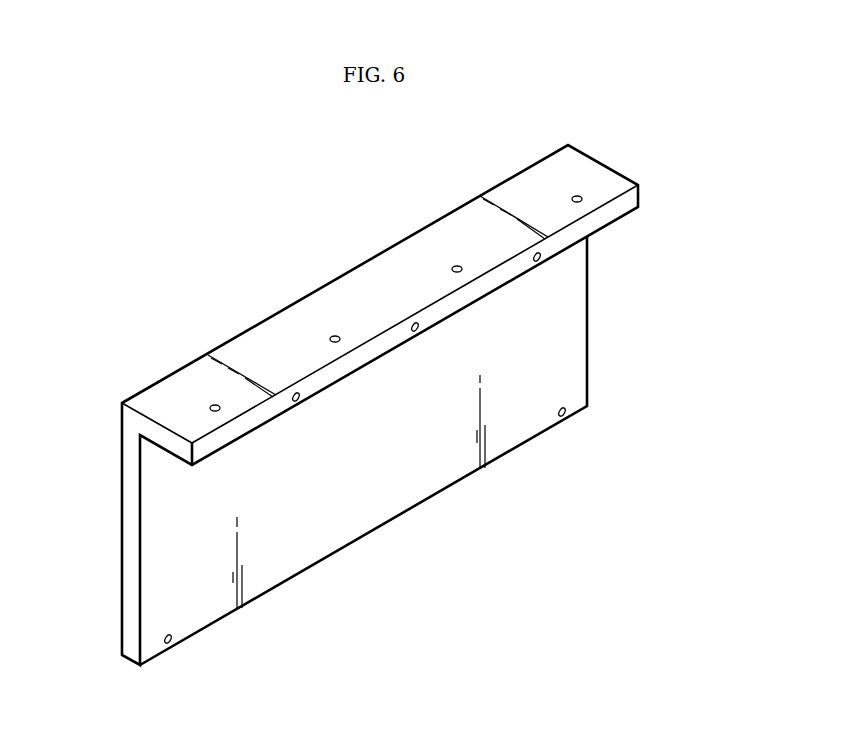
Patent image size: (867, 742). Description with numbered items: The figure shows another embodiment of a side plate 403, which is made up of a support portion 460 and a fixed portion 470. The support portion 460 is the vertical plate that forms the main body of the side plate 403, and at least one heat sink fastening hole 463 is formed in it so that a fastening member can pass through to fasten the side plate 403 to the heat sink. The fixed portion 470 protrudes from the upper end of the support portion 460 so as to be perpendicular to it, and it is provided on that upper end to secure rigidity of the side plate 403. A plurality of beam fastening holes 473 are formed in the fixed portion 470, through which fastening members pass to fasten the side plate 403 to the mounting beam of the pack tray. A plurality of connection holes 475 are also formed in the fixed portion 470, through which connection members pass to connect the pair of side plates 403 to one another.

The side plate 403 is at (278, 241).
The support portion 460 is at (130, 475).
The heat sink fastening hole 463 is at (172, 642).
The fixed portion 470 is at (617, 208).
The beam fastening hole 473 is at (580, 197).
The connection hole 475 is at (542, 259).